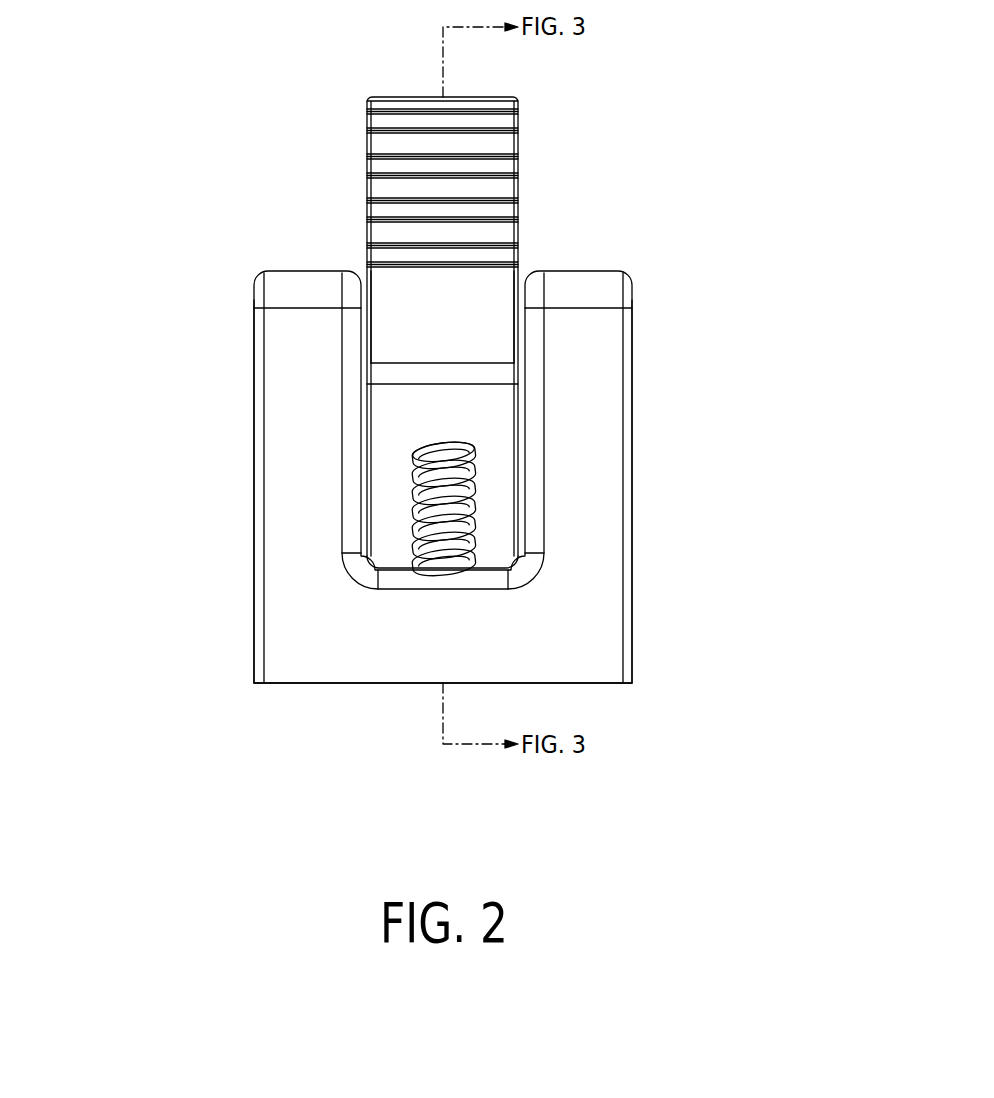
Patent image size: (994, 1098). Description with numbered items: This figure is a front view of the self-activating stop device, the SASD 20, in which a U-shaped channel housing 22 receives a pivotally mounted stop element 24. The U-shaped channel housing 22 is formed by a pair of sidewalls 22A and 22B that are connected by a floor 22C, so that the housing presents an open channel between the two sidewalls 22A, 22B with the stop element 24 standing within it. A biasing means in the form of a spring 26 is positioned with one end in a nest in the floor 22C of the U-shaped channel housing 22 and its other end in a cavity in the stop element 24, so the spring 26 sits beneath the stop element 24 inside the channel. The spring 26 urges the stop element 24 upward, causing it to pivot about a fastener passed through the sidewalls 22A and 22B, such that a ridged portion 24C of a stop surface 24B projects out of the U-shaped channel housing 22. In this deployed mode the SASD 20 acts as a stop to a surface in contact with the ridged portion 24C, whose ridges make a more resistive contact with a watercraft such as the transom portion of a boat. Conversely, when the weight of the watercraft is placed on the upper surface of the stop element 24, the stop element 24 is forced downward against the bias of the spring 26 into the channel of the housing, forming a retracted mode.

The self-activating stop device (SASD) 20 is at (157, 263).
The U-shaped channel housing 22 is at (653, 362).
The sidewall 22A is at (255, 478).
The sidewall 22B is at (633, 471).
The floor 22C is at (352, 684).
The stop element 24 is at (567, 127).
The stop surface 24B is at (458, 315).
The ridged portion 24C is at (368, 187).
The spring 26 is at (482, 511).